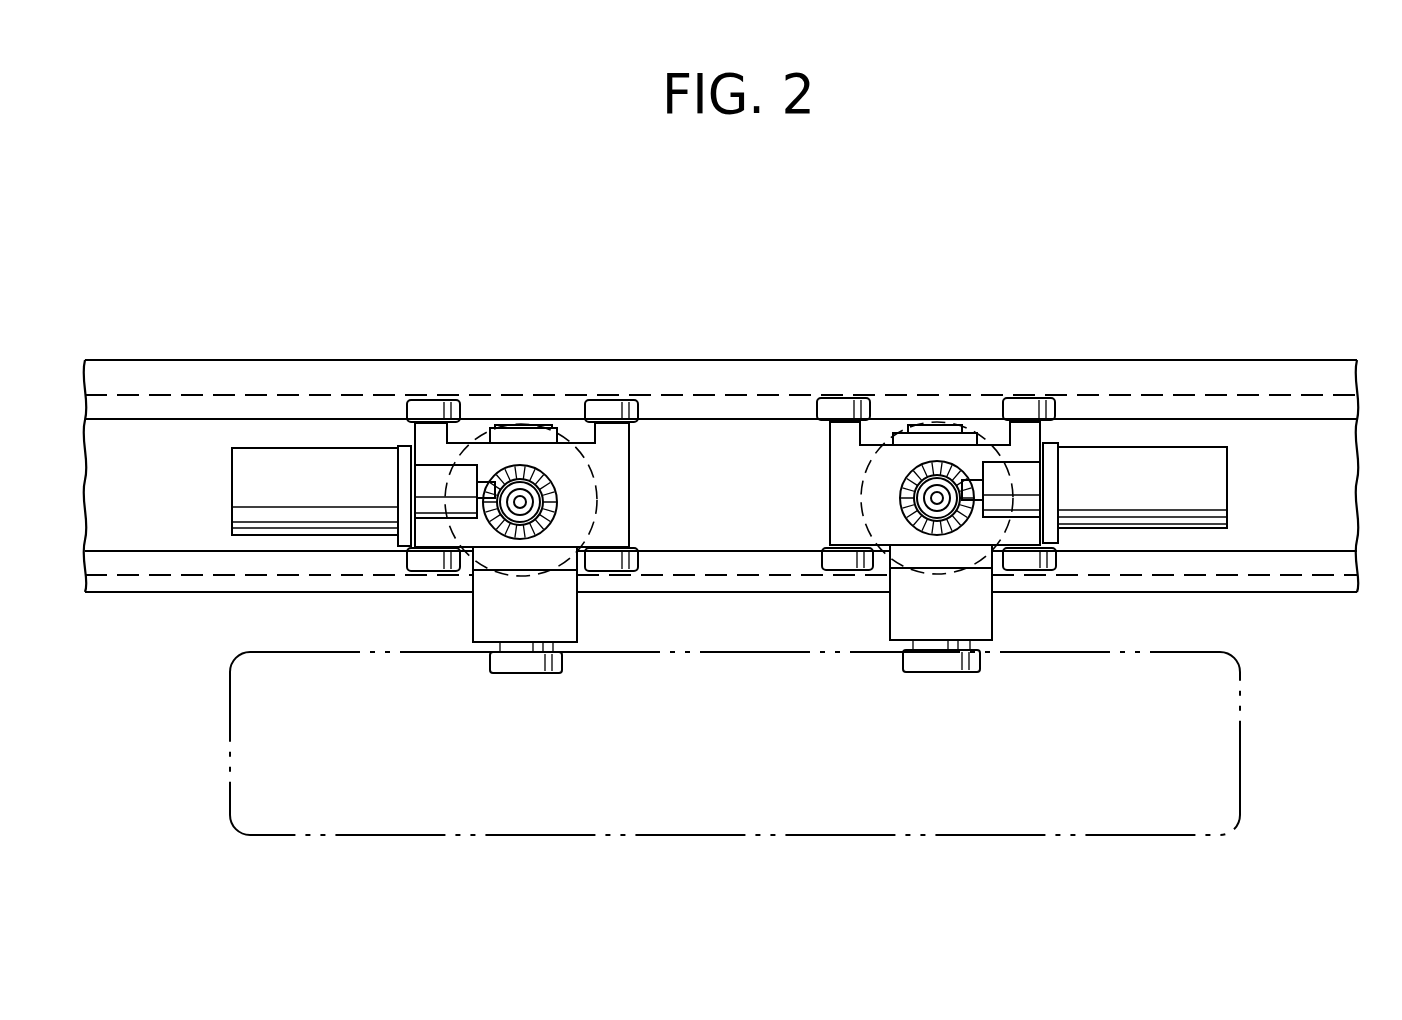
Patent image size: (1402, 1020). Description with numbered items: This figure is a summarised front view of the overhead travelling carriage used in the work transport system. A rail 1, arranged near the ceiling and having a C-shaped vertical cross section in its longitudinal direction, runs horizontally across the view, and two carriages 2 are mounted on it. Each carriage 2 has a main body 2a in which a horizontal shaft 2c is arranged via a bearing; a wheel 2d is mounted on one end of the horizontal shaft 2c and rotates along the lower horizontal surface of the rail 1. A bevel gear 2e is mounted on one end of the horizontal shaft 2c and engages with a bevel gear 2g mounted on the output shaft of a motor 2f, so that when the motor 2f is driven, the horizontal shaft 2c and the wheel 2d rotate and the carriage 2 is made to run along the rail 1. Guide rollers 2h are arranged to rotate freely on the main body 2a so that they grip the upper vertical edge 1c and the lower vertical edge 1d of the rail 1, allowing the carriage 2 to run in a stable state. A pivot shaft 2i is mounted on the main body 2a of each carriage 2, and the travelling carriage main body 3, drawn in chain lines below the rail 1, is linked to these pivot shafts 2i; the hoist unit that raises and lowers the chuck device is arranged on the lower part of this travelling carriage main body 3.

The rail 1 is at (1290, 357).
The upper vertical edge 1c is at (1200, 410).
The lower vertical edge 1d is at (1307, 553).
The carriage 2 is at (662, 487).
The main body 2a is at (620, 523).
The horizontal shaft 2c is at (521, 500).
The wheel 2d is at (605, 450).
The bevel gear 2e is at (553, 478).
The motor 2f is at (310, 455).
The bevel gear 2g is at (497, 478).
The guide rollers 2h is at (432, 410).
The pivot shaft 2i is at (535, 665).
The travelling carriage main body 3 is at (1185, 703).